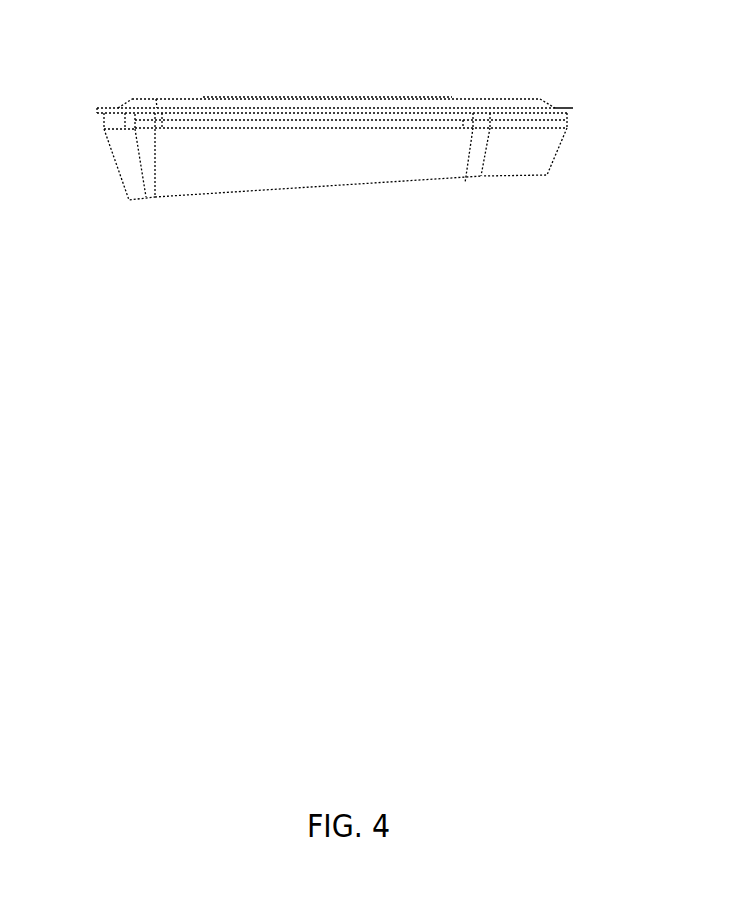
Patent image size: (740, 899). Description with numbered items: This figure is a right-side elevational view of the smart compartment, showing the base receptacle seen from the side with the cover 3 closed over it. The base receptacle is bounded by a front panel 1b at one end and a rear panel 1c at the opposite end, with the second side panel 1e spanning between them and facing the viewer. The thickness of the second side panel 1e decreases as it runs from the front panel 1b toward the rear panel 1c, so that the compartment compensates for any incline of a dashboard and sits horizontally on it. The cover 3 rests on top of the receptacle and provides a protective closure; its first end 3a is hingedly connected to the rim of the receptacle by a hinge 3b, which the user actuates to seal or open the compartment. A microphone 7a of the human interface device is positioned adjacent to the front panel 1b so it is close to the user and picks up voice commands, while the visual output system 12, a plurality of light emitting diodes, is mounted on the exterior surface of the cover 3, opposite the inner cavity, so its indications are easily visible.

The front panel 1b is at (133, 182).
The rear panel 1c is at (534, 161).
The second side panel 1e is at (278, 173).
The cover 3 is at (493, 108).
The first end 3a is at (558, 107).
The hinge 3b is at (465, 183).
The microphone 7a is at (118, 108).
The visual output system 12 is at (407, 97).